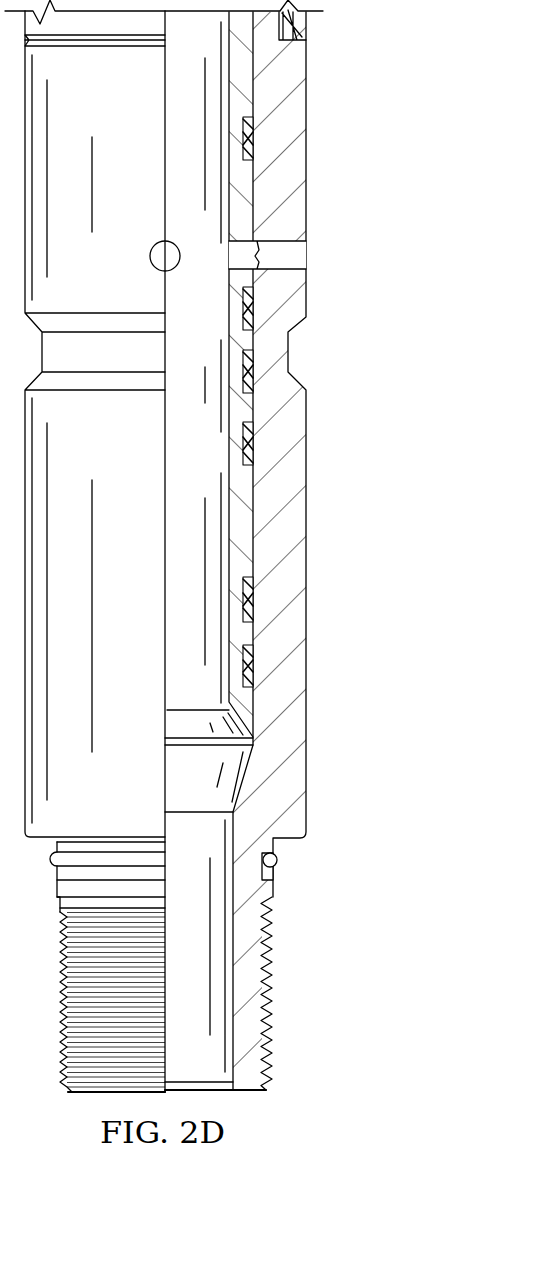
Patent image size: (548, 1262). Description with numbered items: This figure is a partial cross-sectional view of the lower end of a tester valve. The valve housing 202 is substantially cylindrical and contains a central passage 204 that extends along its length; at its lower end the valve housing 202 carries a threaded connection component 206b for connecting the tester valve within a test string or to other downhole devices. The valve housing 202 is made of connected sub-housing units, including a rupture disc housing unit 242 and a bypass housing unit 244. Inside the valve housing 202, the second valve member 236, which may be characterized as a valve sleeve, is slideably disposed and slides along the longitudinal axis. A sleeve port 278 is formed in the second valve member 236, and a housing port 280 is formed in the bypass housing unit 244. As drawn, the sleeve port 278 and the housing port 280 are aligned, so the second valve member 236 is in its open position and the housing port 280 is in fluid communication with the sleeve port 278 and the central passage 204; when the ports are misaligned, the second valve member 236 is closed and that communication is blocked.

The valve housing 202 is at (307, 418).
The central passage 204 is at (217, 465).
The threaded connection component 206b is at (263, 1027).
The second valve member 236 is at (245, 495).
The rupture disc housing unit 242 is at (288, 21).
The bypass housing unit 244 is at (302, 133).
The sleeve port 278 is at (242, 266).
The housing port 280 is at (283, 264).